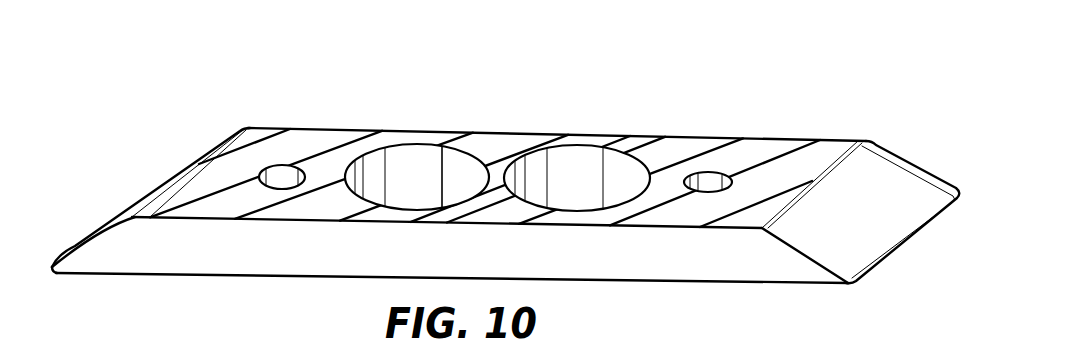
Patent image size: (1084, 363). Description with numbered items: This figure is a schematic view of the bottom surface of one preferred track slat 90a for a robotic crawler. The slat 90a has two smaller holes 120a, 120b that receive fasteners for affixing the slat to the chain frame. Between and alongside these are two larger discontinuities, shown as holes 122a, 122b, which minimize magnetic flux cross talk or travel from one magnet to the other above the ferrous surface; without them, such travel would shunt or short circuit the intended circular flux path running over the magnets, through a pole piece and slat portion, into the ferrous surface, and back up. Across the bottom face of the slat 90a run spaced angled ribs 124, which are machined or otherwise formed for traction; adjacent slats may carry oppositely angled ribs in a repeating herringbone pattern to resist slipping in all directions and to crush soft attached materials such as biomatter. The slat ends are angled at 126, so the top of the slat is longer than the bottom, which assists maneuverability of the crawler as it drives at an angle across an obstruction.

The track slat 90a is at (753, 128).
The hole 120a is at (282, 178).
The hole 120b is at (706, 181).
The discontinuity 122a is at (415, 178).
The discontinuity 122b is at (577, 177).
The spaced angled ribs 124 is at (329, 182).
The angled slat end 126 is at (877, 185).